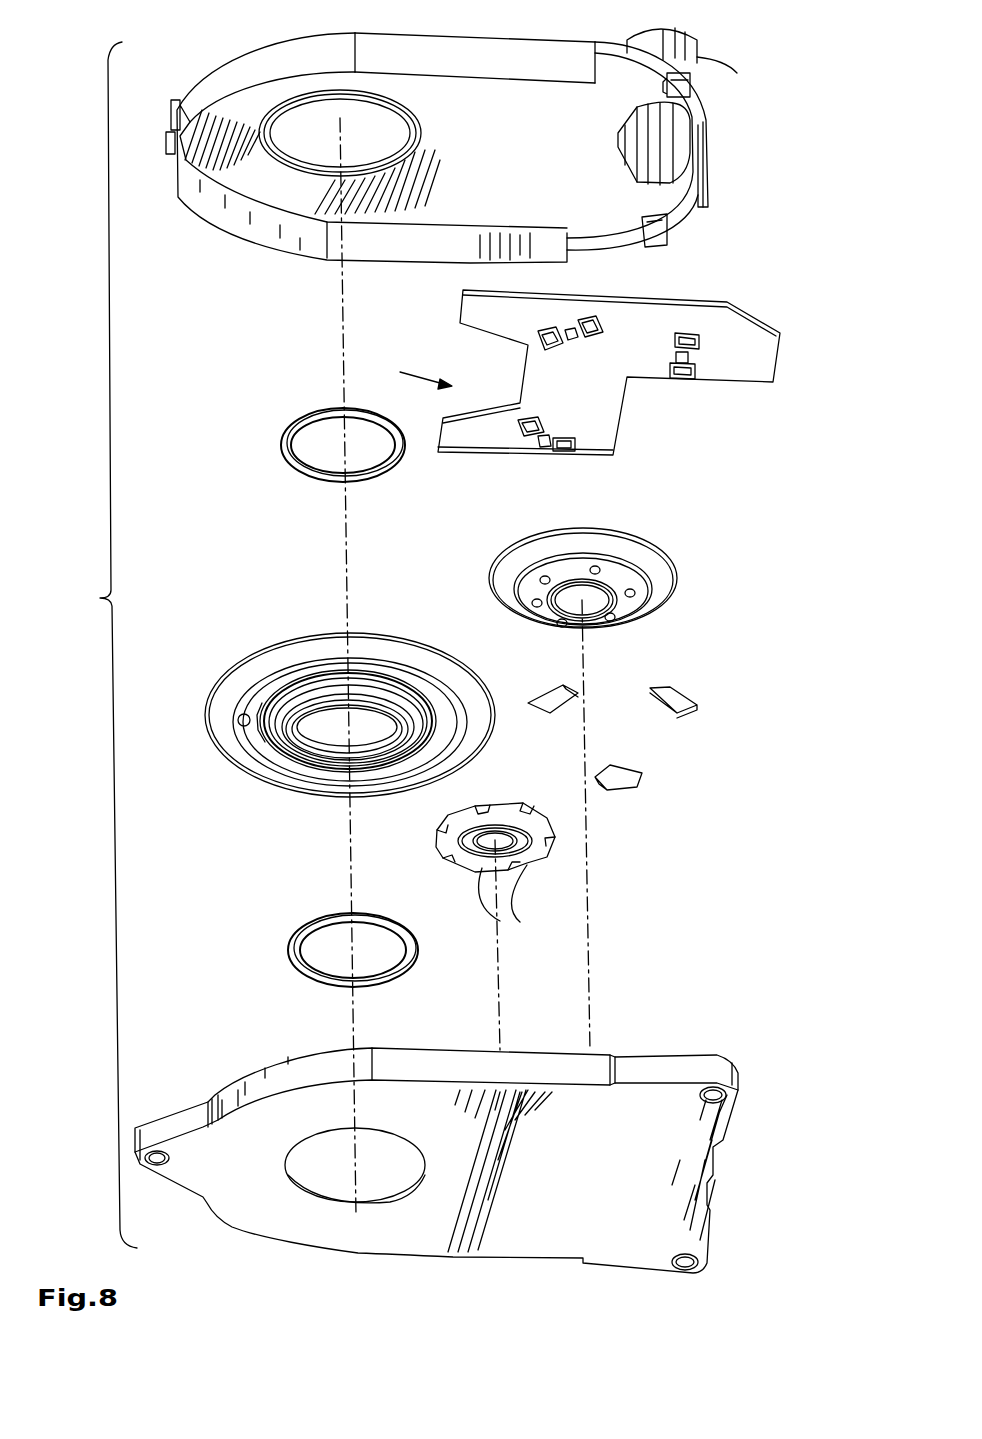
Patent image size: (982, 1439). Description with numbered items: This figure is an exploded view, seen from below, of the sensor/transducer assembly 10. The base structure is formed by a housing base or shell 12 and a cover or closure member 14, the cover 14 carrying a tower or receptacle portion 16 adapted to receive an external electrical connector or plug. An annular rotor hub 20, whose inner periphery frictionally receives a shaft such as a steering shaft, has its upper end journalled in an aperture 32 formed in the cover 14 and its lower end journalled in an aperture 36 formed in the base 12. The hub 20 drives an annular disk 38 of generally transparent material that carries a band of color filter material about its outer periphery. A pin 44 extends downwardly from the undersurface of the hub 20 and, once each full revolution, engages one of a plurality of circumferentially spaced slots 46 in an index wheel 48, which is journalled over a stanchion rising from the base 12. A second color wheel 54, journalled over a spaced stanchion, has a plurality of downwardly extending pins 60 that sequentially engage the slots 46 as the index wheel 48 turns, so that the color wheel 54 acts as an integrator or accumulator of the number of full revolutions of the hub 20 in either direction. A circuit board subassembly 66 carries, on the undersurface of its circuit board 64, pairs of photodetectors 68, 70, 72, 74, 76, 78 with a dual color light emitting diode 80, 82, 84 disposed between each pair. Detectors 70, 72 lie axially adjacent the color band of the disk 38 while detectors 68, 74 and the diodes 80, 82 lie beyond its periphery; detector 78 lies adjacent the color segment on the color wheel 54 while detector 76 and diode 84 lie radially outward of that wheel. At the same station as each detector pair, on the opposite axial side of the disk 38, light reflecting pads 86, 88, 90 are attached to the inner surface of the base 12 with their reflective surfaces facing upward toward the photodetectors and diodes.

The sensor/transducer assembly 10 is at (100, 645).
The housing base 12 is at (436, 1178).
The cover 14 is at (437, 145).
The tower portion 16 is at (726, 79).
The rotor hub 20 is at (298, 760).
The aperture 32 is at (280, 118).
The aperture 36 is at (295, 1185).
The annular disk 38 is at (327, 729).
The pin 44 is at (240, 724).
The slots 46 is at (515, 901).
The index wheel 48 is at (495, 854).
The color wheel 54 is at (569, 577).
The pins 60 is at (545, 582).
The circuit board 64 is at (442, 436).
The circuit board subassembly 66 is at (416, 364).
The photodetector 68 is at (600, 322).
The photodetector 70 is at (540, 332).
The photodetector 72 is at (522, 437).
The photodetector 74 is at (572, 448).
The photodetector 76 is at (688, 334).
The photodetector 78 is at (682, 382).
The light emitting diode 80 is at (566, 333).
The light emitting diode 82 is at (546, 448).
The light emitting diode 84 is at (690, 356).
The pad 86 is at (548, 690).
The pad 88 is at (625, 768).
The pad 90 is at (665, 686).